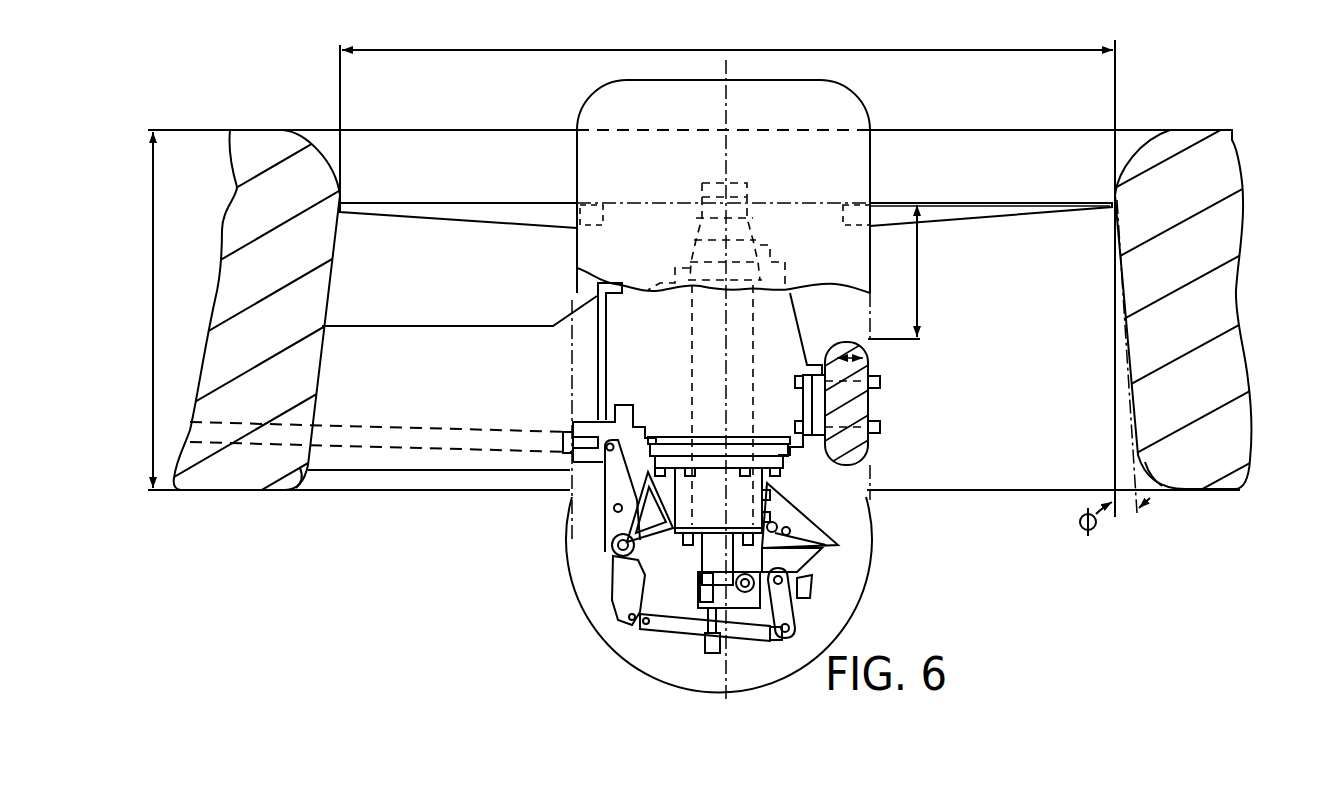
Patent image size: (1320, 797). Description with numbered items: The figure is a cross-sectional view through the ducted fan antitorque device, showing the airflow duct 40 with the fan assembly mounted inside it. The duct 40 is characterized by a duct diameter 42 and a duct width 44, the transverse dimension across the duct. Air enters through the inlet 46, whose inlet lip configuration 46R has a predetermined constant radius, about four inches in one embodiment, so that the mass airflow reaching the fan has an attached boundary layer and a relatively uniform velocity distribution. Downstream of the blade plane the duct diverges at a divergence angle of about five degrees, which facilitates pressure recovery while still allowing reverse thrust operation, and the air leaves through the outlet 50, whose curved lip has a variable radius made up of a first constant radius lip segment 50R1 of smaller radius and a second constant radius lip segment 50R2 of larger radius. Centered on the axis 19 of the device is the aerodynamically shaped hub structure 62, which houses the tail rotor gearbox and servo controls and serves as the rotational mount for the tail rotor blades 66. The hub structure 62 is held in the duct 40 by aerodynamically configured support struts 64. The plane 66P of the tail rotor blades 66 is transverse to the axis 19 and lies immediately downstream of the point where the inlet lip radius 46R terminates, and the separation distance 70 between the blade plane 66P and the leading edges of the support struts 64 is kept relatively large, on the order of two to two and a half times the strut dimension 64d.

The axis 19 is at (729, 70).
The airflow duct 40 is at (975, 460).
The duct diameter 42 is at (838, 57).
The duct width 44 is at (156, 218).
The inlet 46 is at (329, 147).
The inlet lip configuration 46R is at (1170, 172).
The outlet 50 is at (310, 480).
The first constant radius lip segment 50R1 is at (295, 480).
The second constant radius lip segment 50R2 is at (1160, 468).
The hub structure 62 is at (861, 99).
The support struts 64 is at (870, 400).
The strut dimension 64d is at (866, 358).
The tail rotor blades 66 is at (477, 201).
The blade plane 66P is at (975, 202).
The separation distance 70 is at (919, 283).